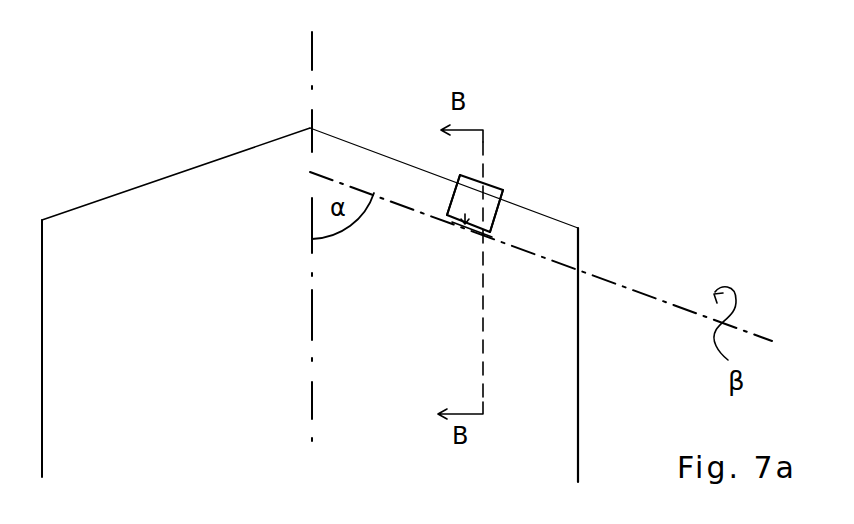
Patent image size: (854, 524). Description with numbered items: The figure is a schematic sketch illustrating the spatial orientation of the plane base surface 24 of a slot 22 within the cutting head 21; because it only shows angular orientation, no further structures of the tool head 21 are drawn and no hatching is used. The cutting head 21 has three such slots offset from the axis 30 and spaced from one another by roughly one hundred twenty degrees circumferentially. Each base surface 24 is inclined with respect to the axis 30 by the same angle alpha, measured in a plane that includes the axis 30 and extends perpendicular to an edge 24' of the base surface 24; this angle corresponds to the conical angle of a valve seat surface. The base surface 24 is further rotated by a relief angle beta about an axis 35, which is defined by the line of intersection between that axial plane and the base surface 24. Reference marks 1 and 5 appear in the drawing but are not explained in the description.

The device 1 is at (500, 203).
The housing 5 is at (492, 186).
The cutting head 21 is at (613, 147).
The slot 22 is at (445, 200).
The base surface 24 is at (551, 241).
The edge of base surface 24' is at (542, 311).
The axis 30 is at (313, 48).
The axis 35 is at (618, 277).